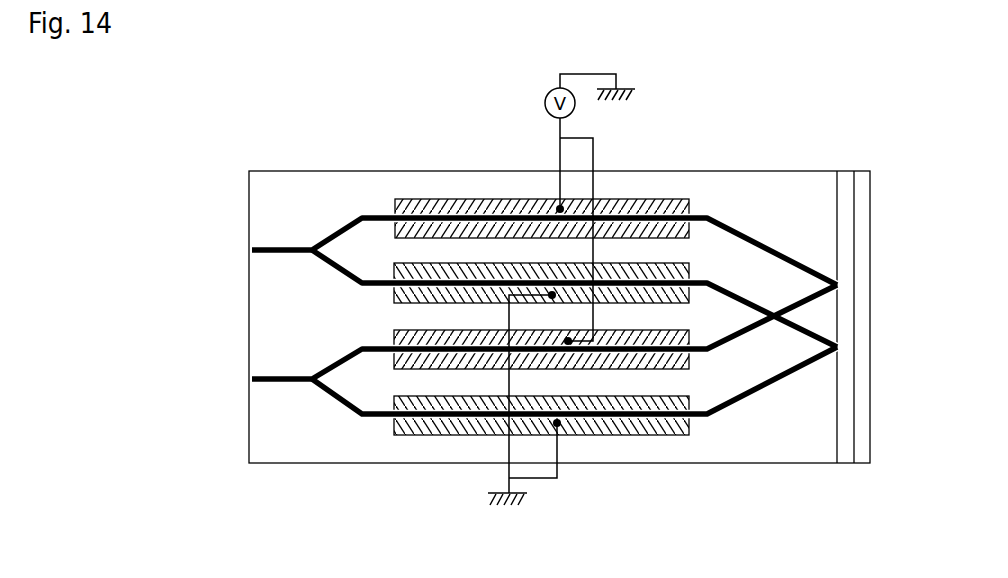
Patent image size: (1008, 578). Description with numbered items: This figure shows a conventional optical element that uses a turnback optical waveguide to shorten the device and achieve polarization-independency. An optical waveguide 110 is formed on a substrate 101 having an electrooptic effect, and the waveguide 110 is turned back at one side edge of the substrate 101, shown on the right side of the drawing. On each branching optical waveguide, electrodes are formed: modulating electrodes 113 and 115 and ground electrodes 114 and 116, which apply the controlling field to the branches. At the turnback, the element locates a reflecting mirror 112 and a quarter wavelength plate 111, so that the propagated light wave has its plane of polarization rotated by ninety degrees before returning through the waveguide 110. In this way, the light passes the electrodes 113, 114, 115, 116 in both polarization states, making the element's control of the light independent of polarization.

The substrate 101 is at (753, 432).
The optical waveguide 110 is at (312, 250).
The ¼ wavelength plate 111 is at (847, 193).
The reflecting mirror 112 is at (862, 193).
The modulating electrode 113 is at (460, 198).
The ground electrode 114 is at (396, 263).
The modulating electrode 115 is at (403, 362).
The ground electrode 116 is at (422, 432).